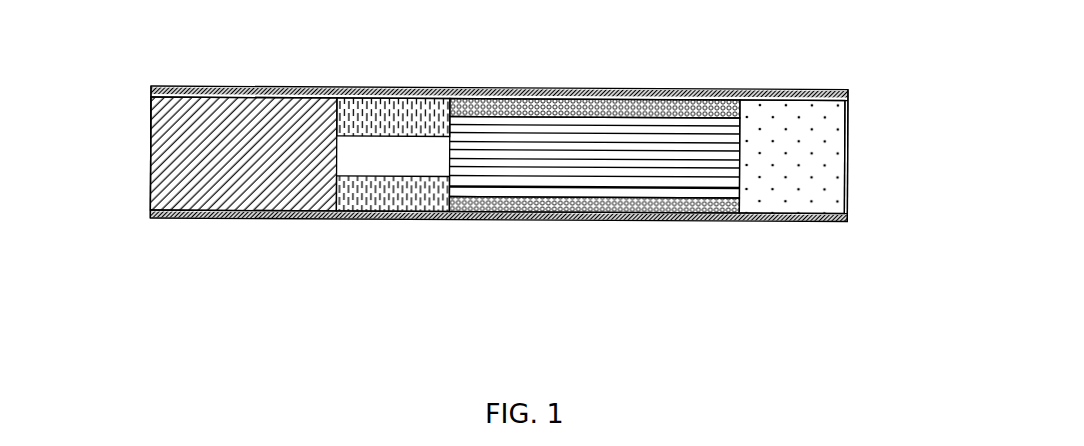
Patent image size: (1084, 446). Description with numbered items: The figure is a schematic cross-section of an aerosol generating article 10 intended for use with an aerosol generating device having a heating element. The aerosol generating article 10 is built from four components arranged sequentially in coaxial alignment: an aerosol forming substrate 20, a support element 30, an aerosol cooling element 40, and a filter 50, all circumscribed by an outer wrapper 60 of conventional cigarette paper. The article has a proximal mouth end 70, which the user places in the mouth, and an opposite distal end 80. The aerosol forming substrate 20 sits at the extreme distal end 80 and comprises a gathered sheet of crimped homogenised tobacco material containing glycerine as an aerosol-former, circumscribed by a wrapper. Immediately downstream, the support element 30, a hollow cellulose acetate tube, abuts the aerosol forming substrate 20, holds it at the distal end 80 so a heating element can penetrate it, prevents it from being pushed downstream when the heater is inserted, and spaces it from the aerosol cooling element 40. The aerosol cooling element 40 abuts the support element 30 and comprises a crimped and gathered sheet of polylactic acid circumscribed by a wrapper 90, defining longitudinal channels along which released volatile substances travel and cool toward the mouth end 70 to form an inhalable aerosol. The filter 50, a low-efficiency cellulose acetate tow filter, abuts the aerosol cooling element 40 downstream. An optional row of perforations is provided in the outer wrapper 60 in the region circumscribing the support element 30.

The aerosol generating article 10 is at (869, 72).
The aerosol forming substrate 20 is at (262, 150).
The support element 30 is at (408, 116).
The aerosol cooling element 40 is at (637, 176).
The filter 50 is at (826, 162).
The outer wrapper 60 is at (713, 88).
The mouth end 70 is at (872, 194).
The distal end 80 is at (137, 107).
The wrapper 90 is at (497, 206).